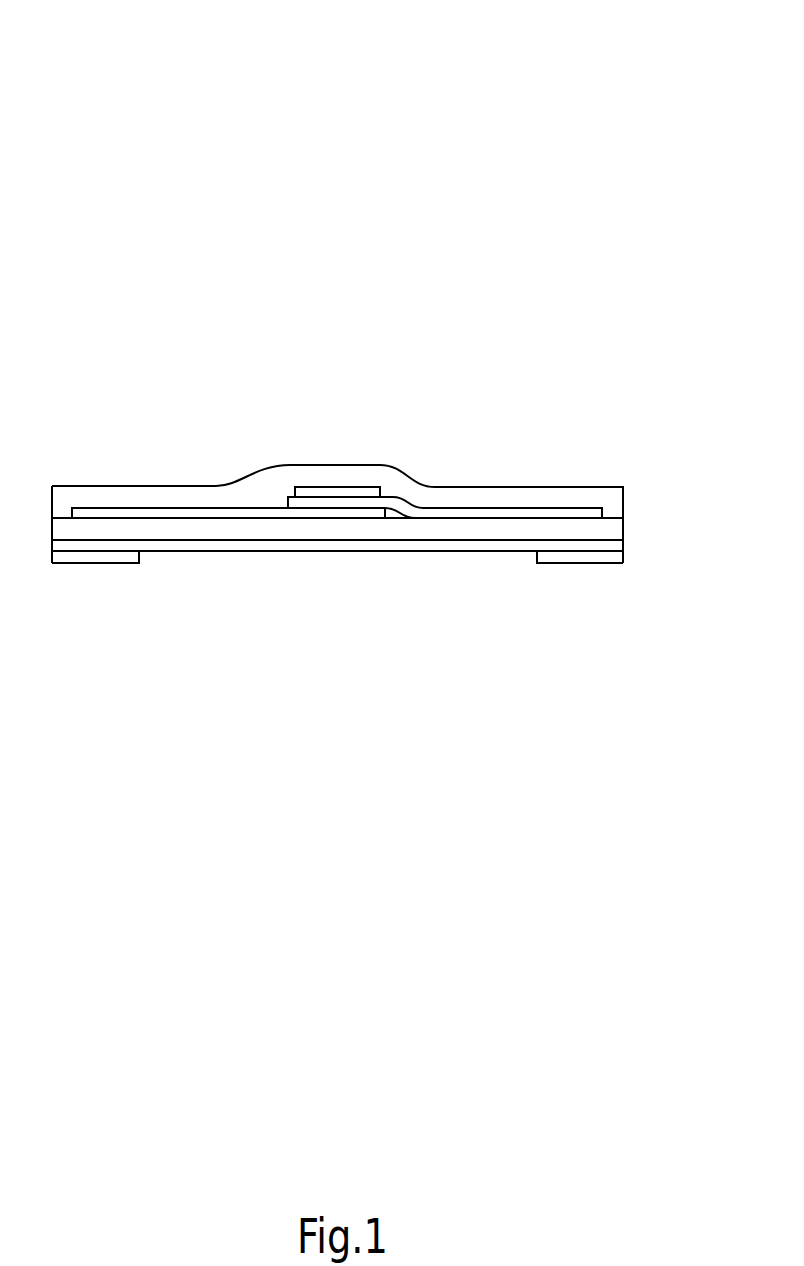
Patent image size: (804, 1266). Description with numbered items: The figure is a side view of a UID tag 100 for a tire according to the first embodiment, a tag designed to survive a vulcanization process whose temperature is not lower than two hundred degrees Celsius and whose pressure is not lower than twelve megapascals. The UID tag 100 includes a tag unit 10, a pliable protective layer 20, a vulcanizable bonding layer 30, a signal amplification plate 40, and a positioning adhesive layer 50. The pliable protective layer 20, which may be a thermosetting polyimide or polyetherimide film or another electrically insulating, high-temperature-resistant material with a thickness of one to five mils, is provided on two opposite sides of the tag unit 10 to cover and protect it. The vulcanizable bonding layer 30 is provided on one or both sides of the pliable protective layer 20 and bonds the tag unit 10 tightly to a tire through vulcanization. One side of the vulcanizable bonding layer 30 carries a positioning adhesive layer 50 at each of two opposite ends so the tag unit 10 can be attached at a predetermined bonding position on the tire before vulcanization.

The UID tag 100 is at (688, 37).
The tag unit 10 is at (338, 491).
The pliable protective layer 20 is at (603, 497).
The vulcanizable bonding layer 30 is at (455, 547).
The signal amplification plate 40 is at (312, 503).
The positioning adhesive layer 50 is at (593, 557).